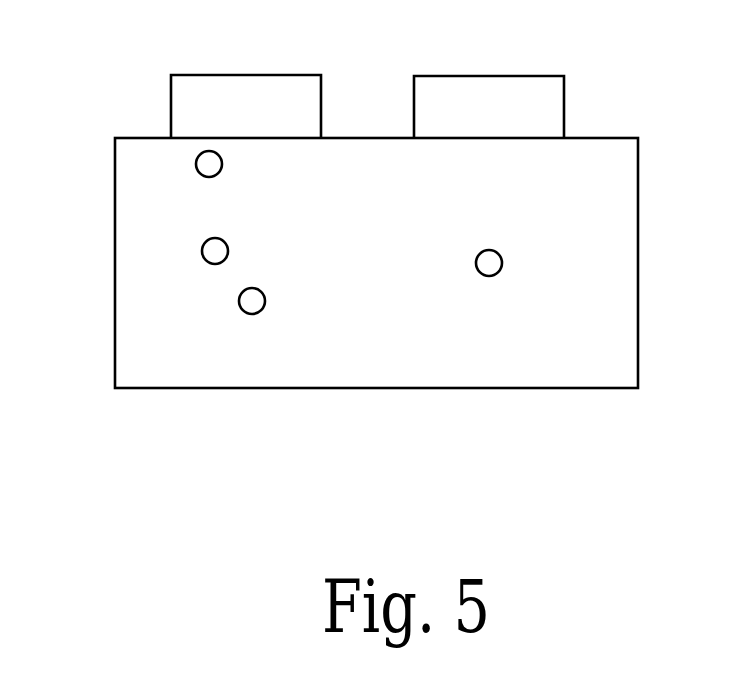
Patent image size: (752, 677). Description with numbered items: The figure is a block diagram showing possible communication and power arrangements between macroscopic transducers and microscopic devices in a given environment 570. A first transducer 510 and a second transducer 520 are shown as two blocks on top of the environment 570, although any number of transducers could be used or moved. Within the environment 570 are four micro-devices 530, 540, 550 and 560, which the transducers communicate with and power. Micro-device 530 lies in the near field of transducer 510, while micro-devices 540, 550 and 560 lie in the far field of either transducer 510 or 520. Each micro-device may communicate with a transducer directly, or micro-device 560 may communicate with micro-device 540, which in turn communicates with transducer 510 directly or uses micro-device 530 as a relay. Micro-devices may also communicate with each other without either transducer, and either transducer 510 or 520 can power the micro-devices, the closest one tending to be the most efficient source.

The first transducer 510 is at (259, 89).
The second transducer 520 is at (463, 88).
The micro-device 530 is at (210, 162).
The micro-device 540 is at (210, 248).
The micro-device 550 is at (489, 263).
The micro-device 560 is at (252, 301).
The environment 570 is at (320, 363).